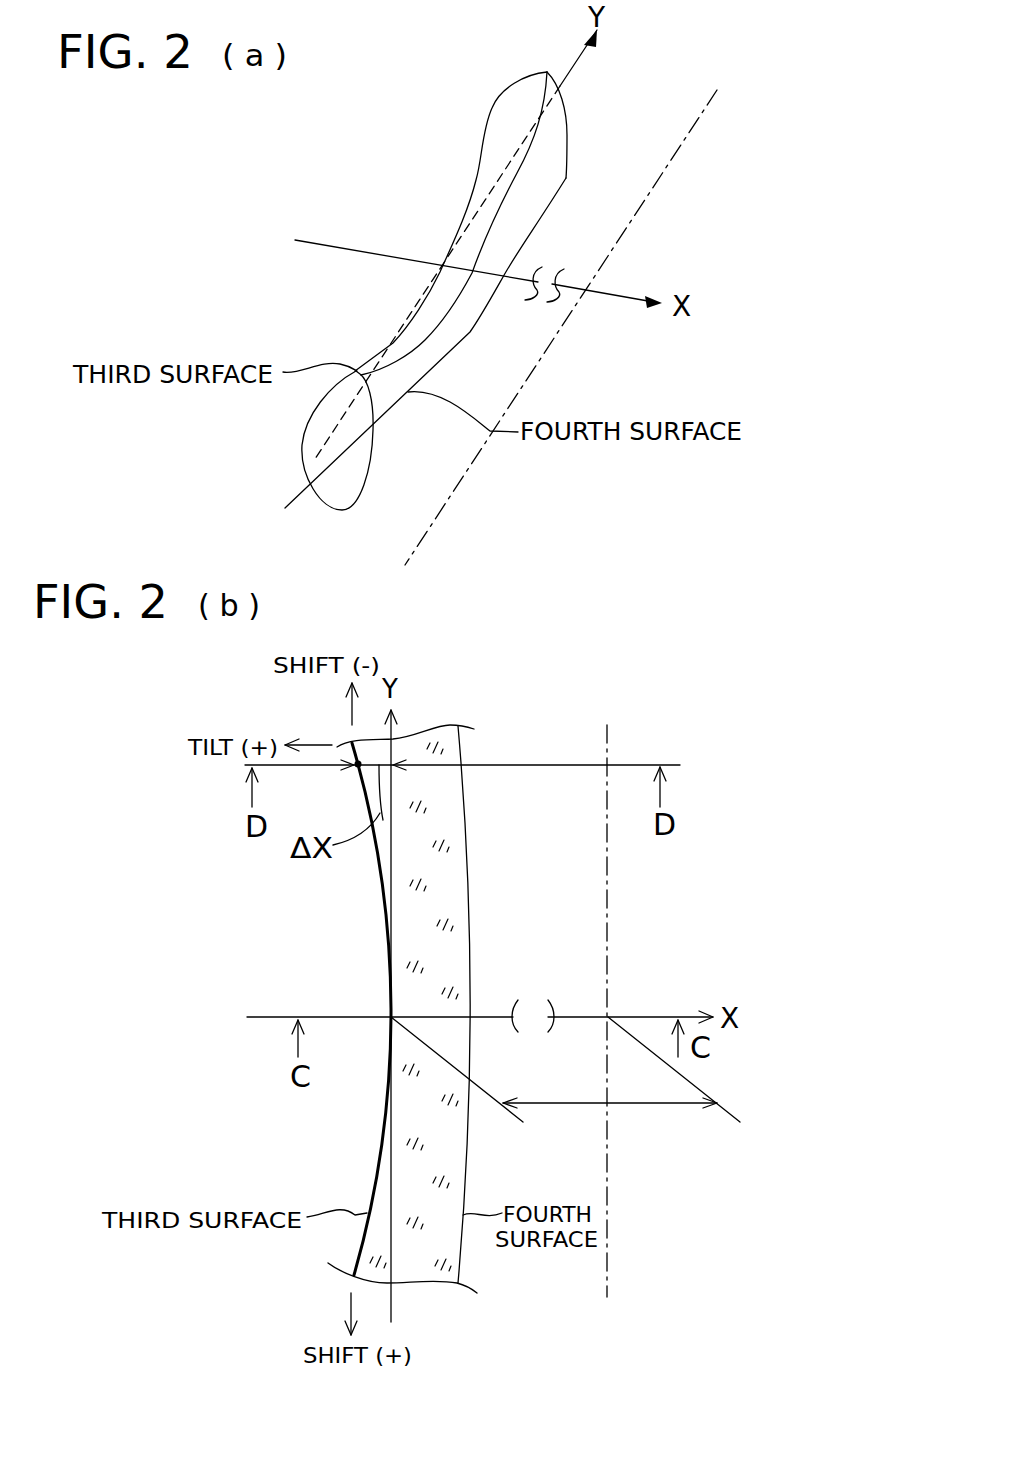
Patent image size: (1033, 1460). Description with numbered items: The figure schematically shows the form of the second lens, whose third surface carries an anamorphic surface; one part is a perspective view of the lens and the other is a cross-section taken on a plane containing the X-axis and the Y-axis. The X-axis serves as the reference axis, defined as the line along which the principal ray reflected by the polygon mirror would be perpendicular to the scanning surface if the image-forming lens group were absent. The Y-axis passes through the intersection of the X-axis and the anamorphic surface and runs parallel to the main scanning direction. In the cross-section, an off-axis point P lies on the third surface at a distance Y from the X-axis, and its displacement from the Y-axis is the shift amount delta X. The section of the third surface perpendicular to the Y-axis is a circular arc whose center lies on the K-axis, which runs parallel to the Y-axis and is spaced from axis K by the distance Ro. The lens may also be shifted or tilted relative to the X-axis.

The off-axis point P is at (357, 767).
The distance from K-axis to arc center Ro is at (565, 1078).